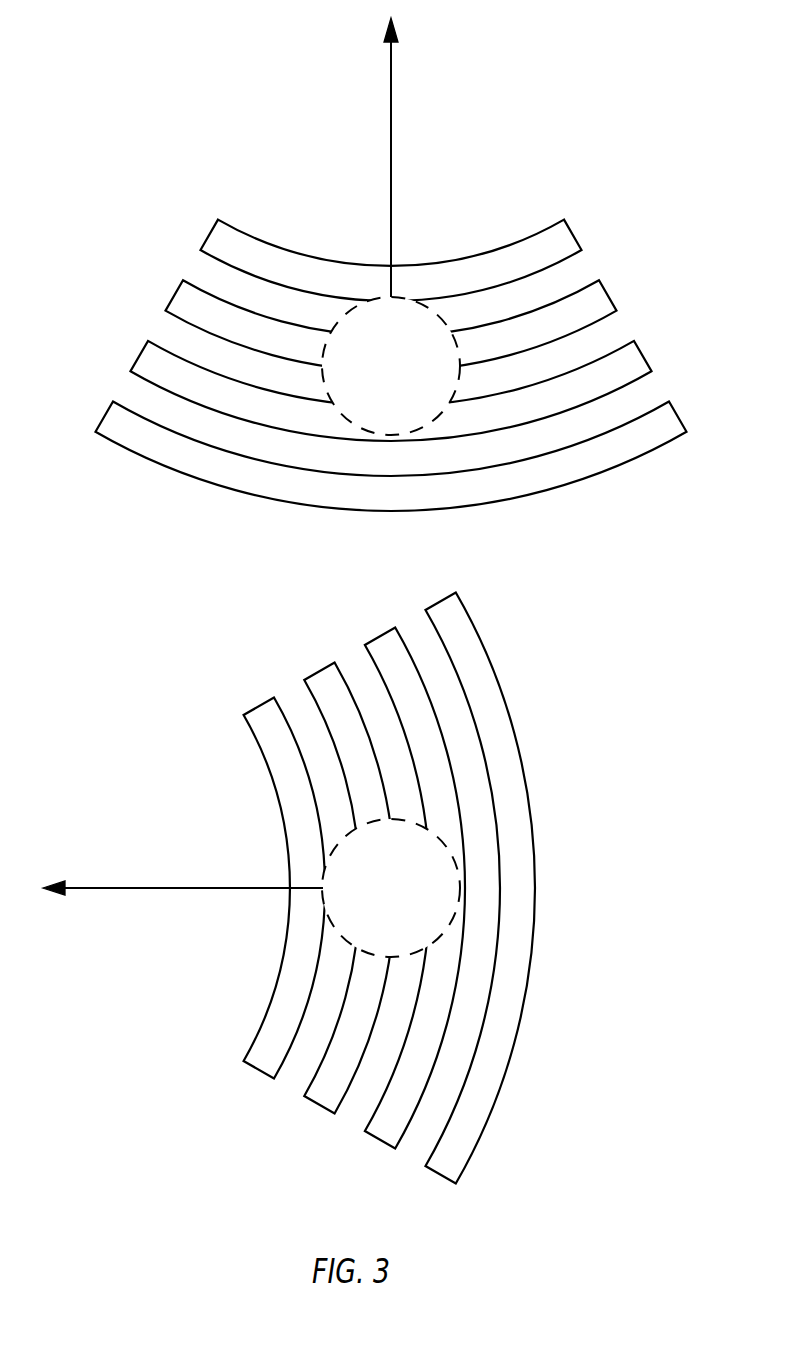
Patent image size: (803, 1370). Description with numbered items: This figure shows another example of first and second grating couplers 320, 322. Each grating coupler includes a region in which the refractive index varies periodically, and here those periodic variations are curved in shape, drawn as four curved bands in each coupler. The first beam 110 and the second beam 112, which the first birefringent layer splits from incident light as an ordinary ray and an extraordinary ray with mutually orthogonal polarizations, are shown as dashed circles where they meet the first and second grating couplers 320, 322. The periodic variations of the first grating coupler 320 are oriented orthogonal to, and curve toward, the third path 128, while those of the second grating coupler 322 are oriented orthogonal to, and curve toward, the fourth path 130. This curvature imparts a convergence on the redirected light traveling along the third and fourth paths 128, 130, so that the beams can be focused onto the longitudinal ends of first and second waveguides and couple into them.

The first beam 110 is at (461, 376).
The second beam 112 is at (460, 868).
The third path 128 is at (393, 160).
The fourth path 130 is at (182, 889).
The first grating coupler 320 is at (635, 460).
The second grating coupler 322 is at (537, 888).